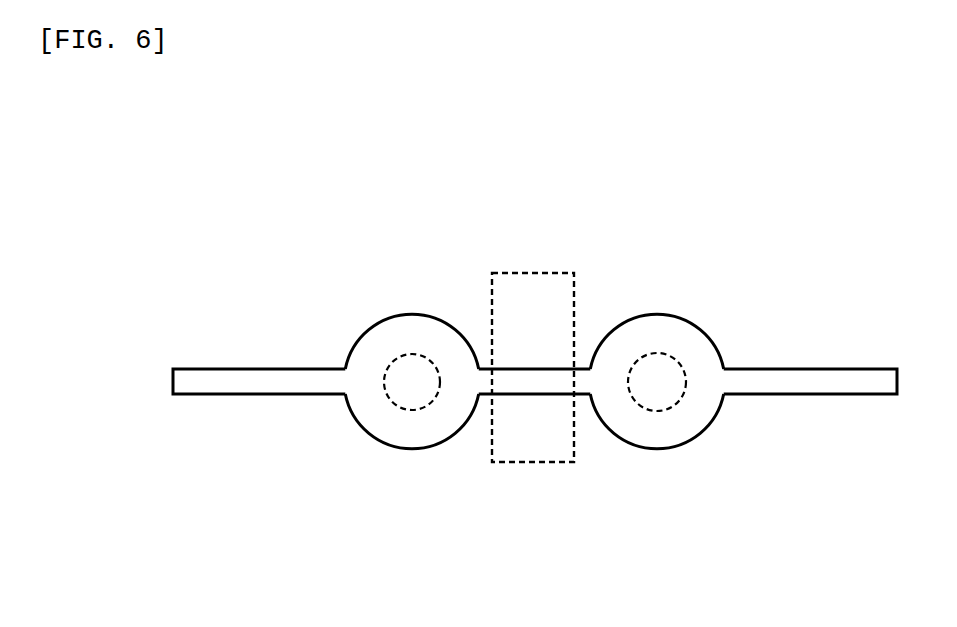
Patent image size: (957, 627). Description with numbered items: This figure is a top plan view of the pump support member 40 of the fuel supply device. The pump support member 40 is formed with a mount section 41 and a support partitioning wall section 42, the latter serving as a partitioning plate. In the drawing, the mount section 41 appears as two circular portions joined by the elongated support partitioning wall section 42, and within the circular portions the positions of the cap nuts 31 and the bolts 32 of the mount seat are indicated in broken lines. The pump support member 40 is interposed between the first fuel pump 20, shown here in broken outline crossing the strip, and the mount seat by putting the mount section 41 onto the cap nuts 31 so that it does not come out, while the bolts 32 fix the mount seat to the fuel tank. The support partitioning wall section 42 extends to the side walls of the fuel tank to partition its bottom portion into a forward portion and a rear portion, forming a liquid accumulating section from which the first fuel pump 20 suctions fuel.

The first fuel pump 20 is at (528, 273).
The cap nuts 31 is at (407, 390).
The bolts 32 is at (660, 410).
The pump support member 40 is at (213, 368).
The mount section 41 is at (412, 313).
The support partitioning wall section 42 is at (240, 395).